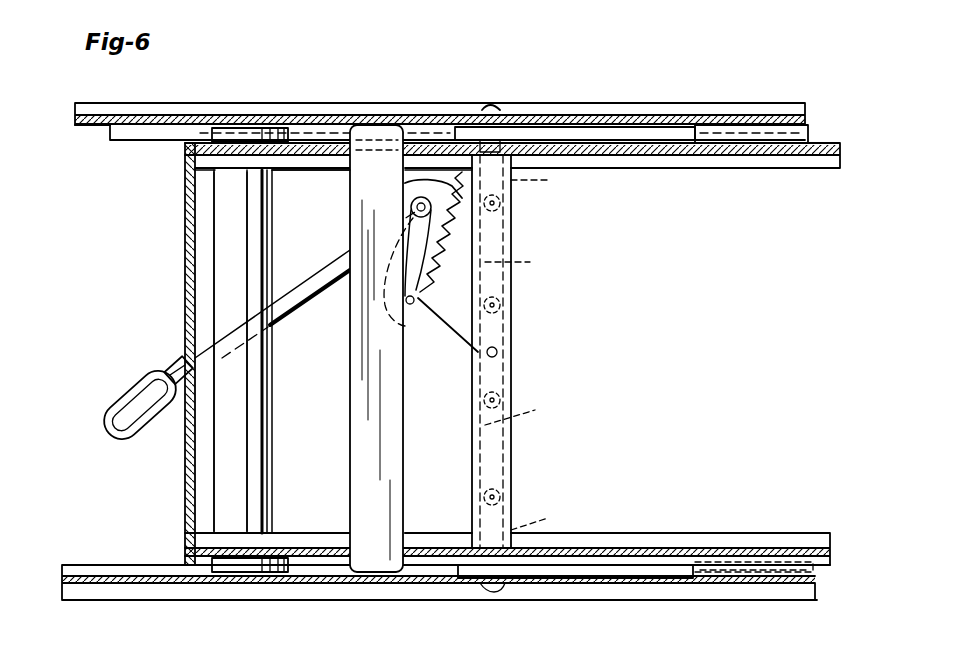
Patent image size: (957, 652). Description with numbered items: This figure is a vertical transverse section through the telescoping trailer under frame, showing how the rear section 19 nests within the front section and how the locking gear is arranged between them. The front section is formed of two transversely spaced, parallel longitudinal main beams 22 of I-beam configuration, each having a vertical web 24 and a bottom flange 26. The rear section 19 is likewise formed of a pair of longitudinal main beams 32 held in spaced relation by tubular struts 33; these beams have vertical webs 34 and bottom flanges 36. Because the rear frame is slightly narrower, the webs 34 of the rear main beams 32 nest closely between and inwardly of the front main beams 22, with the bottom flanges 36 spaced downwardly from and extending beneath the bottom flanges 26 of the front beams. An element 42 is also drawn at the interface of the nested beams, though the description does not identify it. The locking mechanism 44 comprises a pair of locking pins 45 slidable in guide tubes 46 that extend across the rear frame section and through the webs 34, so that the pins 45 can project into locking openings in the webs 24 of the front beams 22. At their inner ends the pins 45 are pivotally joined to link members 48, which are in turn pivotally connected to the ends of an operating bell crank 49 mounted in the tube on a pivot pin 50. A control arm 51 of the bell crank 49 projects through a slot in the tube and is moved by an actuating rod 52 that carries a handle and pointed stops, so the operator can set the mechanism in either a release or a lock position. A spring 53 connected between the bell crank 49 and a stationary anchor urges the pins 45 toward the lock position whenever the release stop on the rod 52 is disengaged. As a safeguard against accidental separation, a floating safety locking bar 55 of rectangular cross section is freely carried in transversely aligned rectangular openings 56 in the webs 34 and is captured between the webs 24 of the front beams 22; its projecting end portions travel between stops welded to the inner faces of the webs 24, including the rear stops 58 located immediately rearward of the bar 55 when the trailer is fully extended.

The rear section 19 is at (172, 248).
The longitudinal main beams 22 is at (414, 345).
The vertical webs 24 is at (432, 102).
The bottom flanges 26 is at (152, 104).
The longitudinal main beams 32 is at (722, 180).
The tubular struts 33 is at (270, 407).
The vertical webs 34 is at (652, 160).
The bottom flanges 36 is at (762, 168).
The latch block 42 is at (268, 127).
The locking mechanism 44 is at (528, 351).
The locking pins 45 is at (545, 350).
The guide tubes 46 is at (512, 448).
The link members 48 is at (532, 350).
The operating bell crank 49 is at (448, 332).
The pivot pin 50 is at (498, 352).
The control arm 51 is at (418, 321).
The actuating rod 52 is at (330, 262).
The spring 53 is at (404, 185).
The floating safety locking bar 55 is at (344, 437).
The rectangular openings 56 is at (345, 168).
The rear stops 58 is at (582, 125).